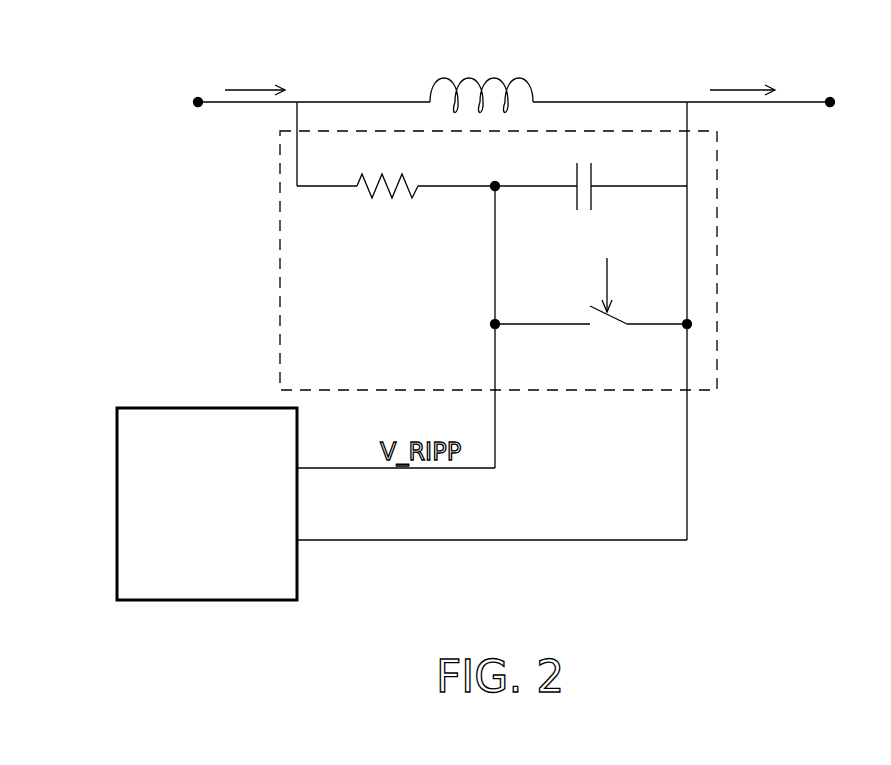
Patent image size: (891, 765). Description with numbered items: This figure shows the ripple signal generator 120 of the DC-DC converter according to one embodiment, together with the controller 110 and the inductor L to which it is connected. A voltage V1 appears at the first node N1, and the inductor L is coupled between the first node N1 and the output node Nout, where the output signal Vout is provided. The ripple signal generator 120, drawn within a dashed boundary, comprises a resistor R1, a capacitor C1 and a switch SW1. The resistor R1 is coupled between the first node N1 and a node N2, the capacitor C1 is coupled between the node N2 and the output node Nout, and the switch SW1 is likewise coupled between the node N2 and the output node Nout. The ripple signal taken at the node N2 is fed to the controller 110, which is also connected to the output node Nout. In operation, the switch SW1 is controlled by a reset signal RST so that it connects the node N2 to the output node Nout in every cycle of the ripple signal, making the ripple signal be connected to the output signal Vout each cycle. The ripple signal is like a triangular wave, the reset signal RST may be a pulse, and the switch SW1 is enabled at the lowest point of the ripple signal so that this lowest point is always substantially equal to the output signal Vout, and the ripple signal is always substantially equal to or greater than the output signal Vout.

The controller 110 is at (205, 408).
The ripple signal generator 120 is at (717, 208).
The inductor L is at (481, 81).
The resistor R1 is at (387, 171).
The capacitor C1 is at (584, 175).
The switch SW1 is at (605, 326).
The reset signal RST is at (610, 274).
The first node N1 is at (194, 86).
The node N2 is at (493, 173).
The output node Nout is at (829, 86).
The first voltage V1 is at (255, 79).
The output signal Vout is at (742, 79).